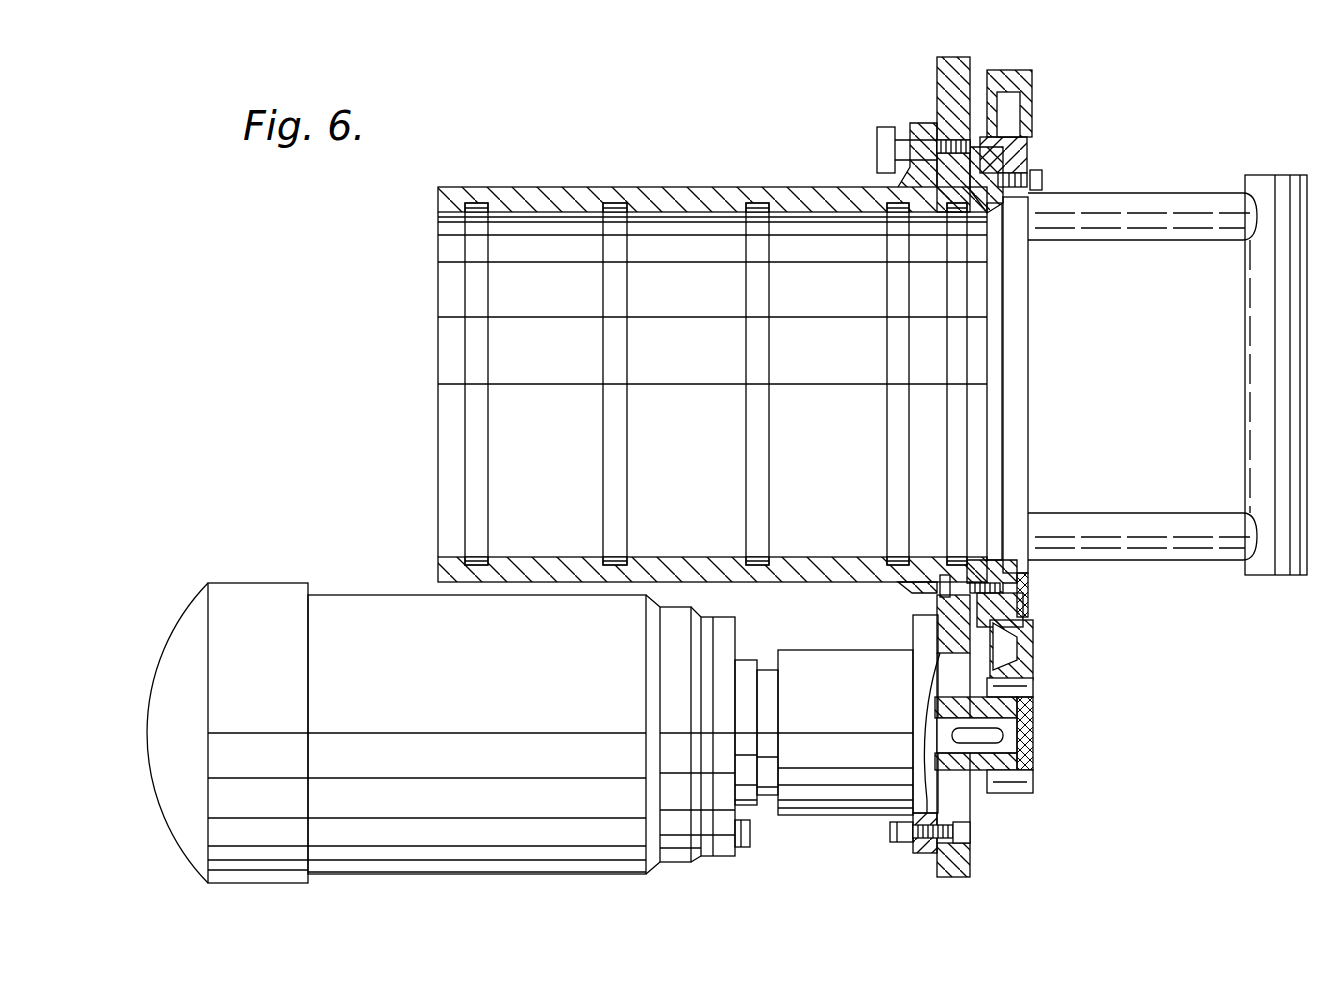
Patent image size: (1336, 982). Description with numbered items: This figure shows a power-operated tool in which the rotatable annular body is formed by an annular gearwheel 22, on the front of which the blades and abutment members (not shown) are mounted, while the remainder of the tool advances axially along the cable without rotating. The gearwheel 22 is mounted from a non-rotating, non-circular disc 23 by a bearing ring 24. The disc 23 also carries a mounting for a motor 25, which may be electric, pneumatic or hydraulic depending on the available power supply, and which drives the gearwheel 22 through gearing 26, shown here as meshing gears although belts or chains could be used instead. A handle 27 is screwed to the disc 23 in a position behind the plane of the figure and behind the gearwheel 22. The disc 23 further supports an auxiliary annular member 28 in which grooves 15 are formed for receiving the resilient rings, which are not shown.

The grooves 15 is at (605, 287).
The annular gearwheel 22 is at (1032, 128).
The non-rotating disc 23 is at (963, 75).
The bearing ring 24 is at (988, 198).
The motor 25 is at (487, 700).
The gearing 26 is at (1028, 800).
The handle 27 is at (1260, 373).
The auxiliary annular member 28 is at (690, 187).